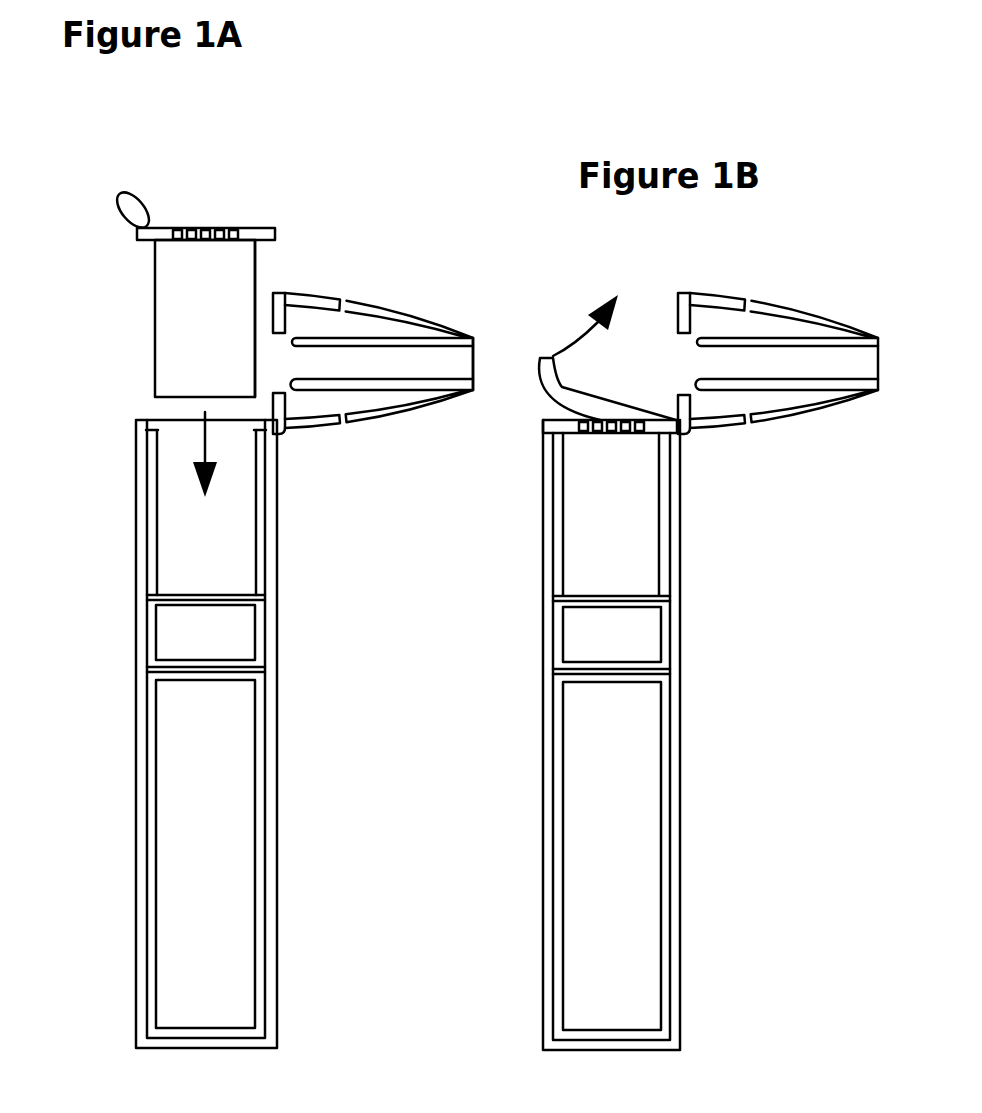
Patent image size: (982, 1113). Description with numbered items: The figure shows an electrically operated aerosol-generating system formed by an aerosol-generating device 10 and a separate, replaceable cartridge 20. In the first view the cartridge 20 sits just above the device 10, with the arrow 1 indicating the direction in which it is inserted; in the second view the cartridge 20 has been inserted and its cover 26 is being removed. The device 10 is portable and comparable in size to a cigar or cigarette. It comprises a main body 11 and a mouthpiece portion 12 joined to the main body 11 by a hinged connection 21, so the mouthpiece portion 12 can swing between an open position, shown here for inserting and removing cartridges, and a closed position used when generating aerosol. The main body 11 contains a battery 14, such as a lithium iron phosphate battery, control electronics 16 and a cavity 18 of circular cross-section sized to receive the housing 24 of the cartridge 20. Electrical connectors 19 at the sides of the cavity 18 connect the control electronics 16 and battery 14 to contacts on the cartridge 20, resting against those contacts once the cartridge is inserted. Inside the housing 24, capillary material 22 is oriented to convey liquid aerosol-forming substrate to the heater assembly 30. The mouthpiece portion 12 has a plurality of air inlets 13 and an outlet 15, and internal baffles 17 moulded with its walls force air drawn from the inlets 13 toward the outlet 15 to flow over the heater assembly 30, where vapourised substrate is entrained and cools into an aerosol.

In FIG. 1A, the arrow 1 is at (158, 443).
In FIG. 1A, the aerosol-generating device 10 is at (133, 787).
In FIG. 1B, the aerosol-generating device 10 is at (541, 787).
In FIG. 1A, the main body 11 is at (277, 567).
In FIG. 1A, the mouthpiece portion 12 is at (402, 310).
In FIG. 1B, the mouthpiece portion 12 is at (787, 323).
In FIG. 1A, the air inlets 13 is at (343, 298).
In FIG. 1B, the air inlets 13 is at (730, 270).
In FIG. 1A, the battery 14 is at (227, 884).
In FIG. 1B, the battery 14 is at (635, 885).
In FIG. 1A, the outlet 15 is at (475, 362).
In FIG. 1A, the control electronics 16 is at (185, 637).
In FIG. 1B, the control electronics 16 is at (592, 640).
In FIG. 1A, the internal baffles 17 is at (378, 383).
In FIG. 1A, the cavity 18 is at (193, 556).
In FIG. 1A, the electrical connectors 19 is at (150, 512).
In FIG. 1B, the electrical connectors 19 is at (665, 510).
In FIG. 1A, the cartridge 20 is at (141, 333).
In FIG. 1B, the cartridge 20 is at (600, 557).
In FIG. 1A, the hinged connection 21 is at (280, 437).
In FIG. 1B, the hinged connection 21 is at (719, 455).
In FIG. 1A, the capillary material 22 is at (198, 293).
In FIG. 1A, the housing 24 is at (257, 273).
In FIG. 1A, the cover 26 is at (183, 228).
In FIG. 1B, the cover 26 is at (607, 408).
In FIG. 1A, the heater assembly 30 is at (251, 229).